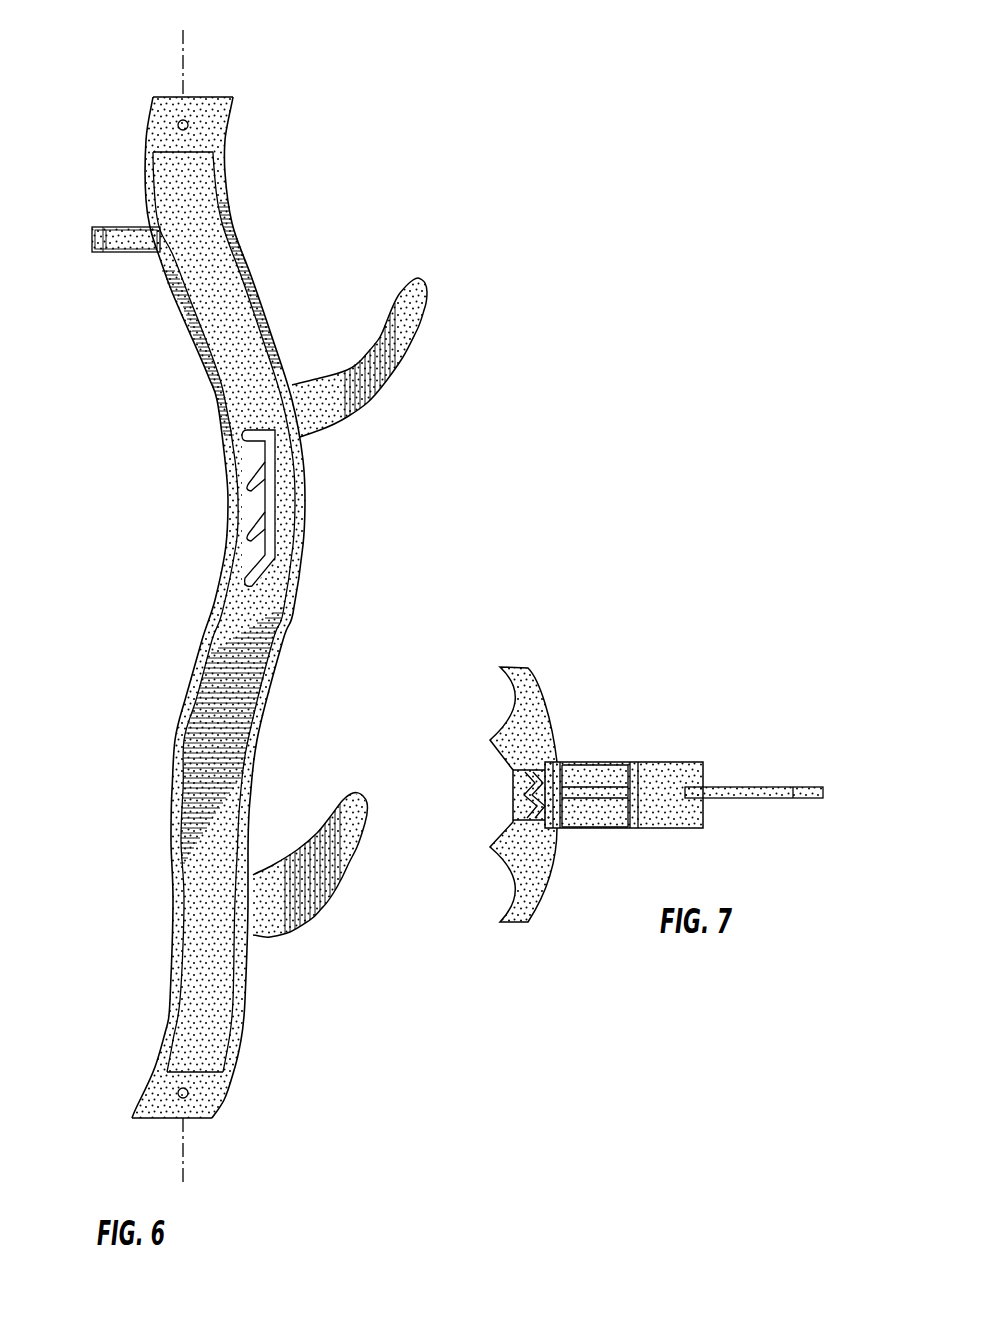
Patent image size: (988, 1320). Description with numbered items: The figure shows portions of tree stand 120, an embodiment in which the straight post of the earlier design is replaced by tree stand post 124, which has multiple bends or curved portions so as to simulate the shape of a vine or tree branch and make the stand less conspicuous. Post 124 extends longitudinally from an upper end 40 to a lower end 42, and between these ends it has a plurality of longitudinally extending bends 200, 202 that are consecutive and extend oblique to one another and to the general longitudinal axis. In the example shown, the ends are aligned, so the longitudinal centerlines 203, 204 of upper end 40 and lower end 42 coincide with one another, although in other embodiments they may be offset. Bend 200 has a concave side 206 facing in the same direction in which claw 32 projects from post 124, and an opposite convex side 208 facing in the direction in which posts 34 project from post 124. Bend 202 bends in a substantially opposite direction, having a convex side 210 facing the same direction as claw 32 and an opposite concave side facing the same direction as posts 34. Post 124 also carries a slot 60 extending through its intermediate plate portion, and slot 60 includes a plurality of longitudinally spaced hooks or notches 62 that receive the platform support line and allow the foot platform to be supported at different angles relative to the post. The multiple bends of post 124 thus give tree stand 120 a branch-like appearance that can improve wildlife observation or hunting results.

In FIG. 6, the tree stand 120 is at (267, 606).
In FIG. 7, the tree stand 120 is at (629, 789).
In FIG. 6, the upper end 40 is at (252, 553).
In FIG. 7, the upper end 40 is at (664, 784).
In FIG. 6, the longitudinal centerline 203 is at (185, 72).
In FIG. 6, the longitudinal centerline 204 is at (183, 1172).
In FIG. 6, the claw 32 is at (120, 227).
In FIG. 7, the claw 32 is at (530, 915).
In FIG. 6, the posts 34 is at (428, 348).
In FIG. 7, the posts 34 is at (773, 787).
In FIG. 6, the tree stand post 124 is at (258, 300).
In FIG. 7, the tree stand post 124 is at (673, 828).
In FIG. 6, the inner layer 206 is at (226, 490).
In FIG. 6, the bend 200 is at (308, 500).
In FIG. 6, the convex side 208 is at (305, 545).
In FIG. 6, the slot 60 is at (268, 520).
In FIG. 6, the notches 62 is at (242, 518).
In FIG. 6, the bend 202 is at (181, 740).
In FIG. 6, the convex side 210 is at (169, 808).
In FIG. 6, the lower end 42 is at (128, 1121).